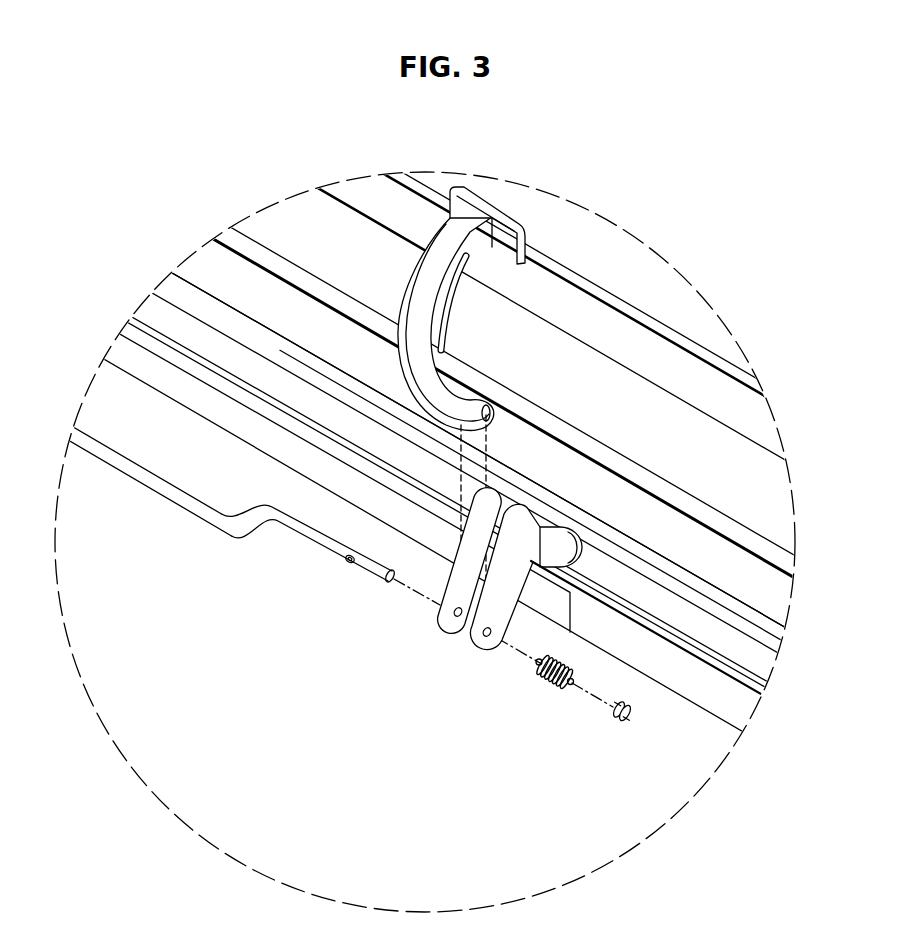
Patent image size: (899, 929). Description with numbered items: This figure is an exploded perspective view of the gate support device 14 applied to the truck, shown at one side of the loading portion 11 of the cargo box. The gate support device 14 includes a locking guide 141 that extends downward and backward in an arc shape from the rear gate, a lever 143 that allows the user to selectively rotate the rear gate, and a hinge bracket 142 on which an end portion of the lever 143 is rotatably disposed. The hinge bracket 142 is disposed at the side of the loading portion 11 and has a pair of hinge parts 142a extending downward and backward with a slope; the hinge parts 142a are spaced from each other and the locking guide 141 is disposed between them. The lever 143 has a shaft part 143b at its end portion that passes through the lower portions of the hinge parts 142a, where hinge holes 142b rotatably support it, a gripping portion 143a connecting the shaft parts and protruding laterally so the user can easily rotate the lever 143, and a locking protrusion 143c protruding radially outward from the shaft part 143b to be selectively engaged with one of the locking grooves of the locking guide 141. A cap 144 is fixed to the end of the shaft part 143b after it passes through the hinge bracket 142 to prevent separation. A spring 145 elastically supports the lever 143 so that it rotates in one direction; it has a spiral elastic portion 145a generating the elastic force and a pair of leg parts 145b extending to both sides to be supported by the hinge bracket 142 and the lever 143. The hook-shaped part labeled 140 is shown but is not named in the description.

The loading portion 11 is at (773, 597).
The gate support device 14 is at (551, 400).
The hook portion 140 is at (461, 278).
The locking guide 141 is at (443, 302).
The hinge bracket 142 is at (619, 626).
The hinge part 142a is at (440, 628).
The hinge hole 142b is at (485, 637).
The lever 143 is at (198, 504).
The gripping portion 143a is at (162, 488).
The shaft part 143b is at (377, 573).
The locking protrusion 143c is at (346, 561).
The cap 144 is at (627, 716).
The spring 145 is at (513, 720).
The elastic portion 145a is at (548, 684).
The leg part 145b is at (548, 777).